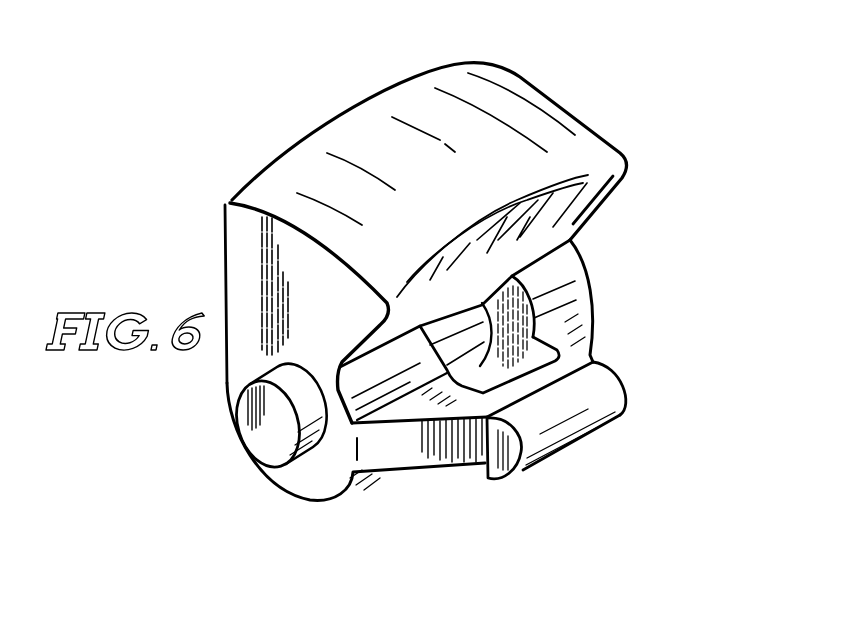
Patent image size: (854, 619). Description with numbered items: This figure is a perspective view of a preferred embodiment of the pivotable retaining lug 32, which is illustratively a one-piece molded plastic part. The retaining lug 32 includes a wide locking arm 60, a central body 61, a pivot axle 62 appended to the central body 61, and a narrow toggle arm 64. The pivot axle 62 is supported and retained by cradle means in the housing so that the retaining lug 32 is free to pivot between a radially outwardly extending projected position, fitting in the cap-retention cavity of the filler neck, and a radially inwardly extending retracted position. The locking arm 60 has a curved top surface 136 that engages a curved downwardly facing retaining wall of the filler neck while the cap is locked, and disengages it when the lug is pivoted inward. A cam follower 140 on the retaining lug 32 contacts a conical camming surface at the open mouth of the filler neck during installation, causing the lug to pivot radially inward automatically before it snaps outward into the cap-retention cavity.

The locking arm 60 is at (271, 112).
The retaining lug 32 is at (650, 177).
The curved top surface 136 is at (543, 115).
The cam follower 140 is at (224, 250).
The central body 61 is at (312, 470).
The pivot axle 62 is at (268, 438).
The toggle arm 64 is at (637, 369).